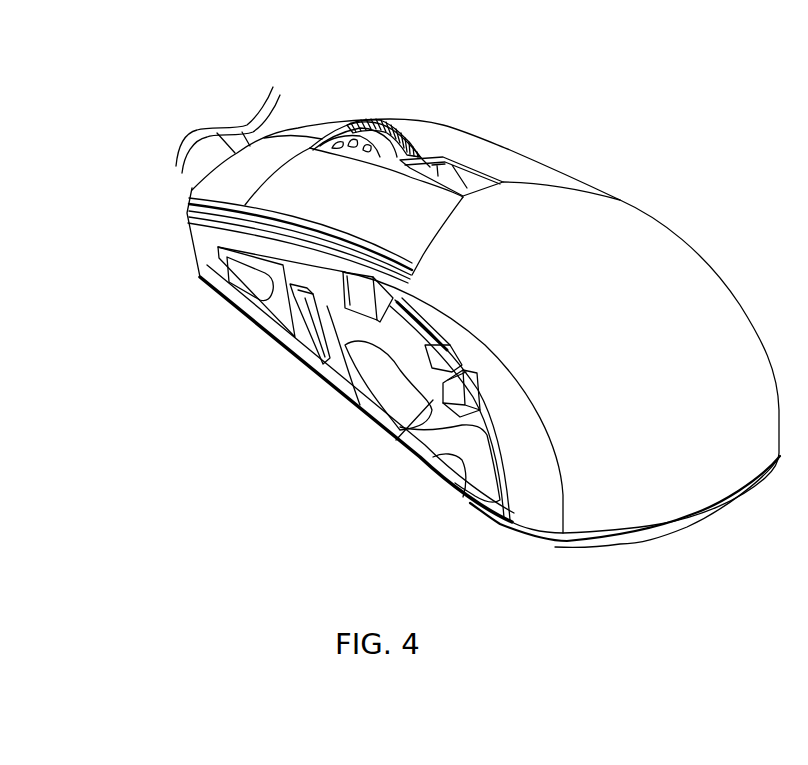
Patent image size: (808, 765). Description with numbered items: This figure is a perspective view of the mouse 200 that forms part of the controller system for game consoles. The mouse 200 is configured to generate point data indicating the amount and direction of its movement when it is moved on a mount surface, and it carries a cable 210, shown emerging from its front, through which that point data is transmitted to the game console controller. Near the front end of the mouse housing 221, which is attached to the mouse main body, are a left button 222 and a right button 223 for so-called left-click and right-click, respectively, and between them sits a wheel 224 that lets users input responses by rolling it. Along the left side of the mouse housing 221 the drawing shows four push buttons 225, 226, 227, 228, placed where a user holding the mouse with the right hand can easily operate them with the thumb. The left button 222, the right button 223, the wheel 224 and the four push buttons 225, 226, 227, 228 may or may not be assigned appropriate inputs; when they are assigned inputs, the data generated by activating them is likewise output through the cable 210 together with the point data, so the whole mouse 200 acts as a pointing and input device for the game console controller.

The mouse 200 is at (647, 84).
The cable 210 is at (210, 167).
The mouse housing 221 is at (647, 226).
The left button 222 is at (228, 188).
The right button 223 is at (327, 125).
The wheel 224 is at (387, 122).
The push button 225 is at (305, 335).
The push button 226 is at (360, 303).
The push button 227 is at (408, 341).
The push button 228 is at (458, 412).